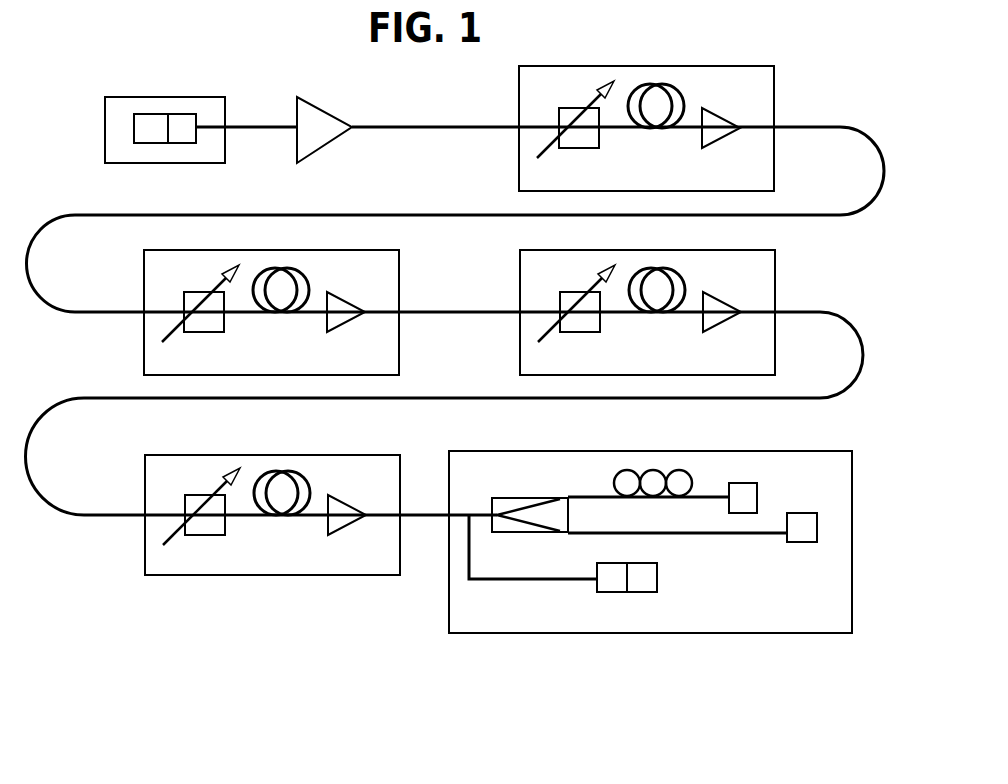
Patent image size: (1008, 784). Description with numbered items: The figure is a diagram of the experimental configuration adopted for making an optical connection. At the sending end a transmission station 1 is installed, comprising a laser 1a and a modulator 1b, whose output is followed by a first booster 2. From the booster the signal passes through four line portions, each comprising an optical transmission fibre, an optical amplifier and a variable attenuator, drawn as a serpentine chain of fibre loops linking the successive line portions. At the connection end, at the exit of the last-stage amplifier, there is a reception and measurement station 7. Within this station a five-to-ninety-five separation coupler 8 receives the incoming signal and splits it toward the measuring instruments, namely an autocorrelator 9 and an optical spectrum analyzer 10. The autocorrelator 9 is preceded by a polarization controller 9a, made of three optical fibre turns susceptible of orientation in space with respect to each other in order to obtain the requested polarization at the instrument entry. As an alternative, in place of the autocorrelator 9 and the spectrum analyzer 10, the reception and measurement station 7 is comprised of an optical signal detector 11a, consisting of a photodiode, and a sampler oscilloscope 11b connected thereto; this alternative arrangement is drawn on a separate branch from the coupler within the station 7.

The transmission station 1 is at (115, 148).
The laser 1a is at (153, 118).
The modulator 1b is at (188, 118).
The first booster 2 is at (317, 110).
The reception and measurement station 7 is at (490, 637).
The 5/95-separation coupler 8 is at (518, 497).
The polarization controller 9a is at (688, 479).
The autocorrelator 9 is at (752, 491).
The optical spectrum analyzer 10 is at (803, 543).
The optical signal detector 11a is at (613, 587).
The sampler oscilloscope 11b is at (651, 570).